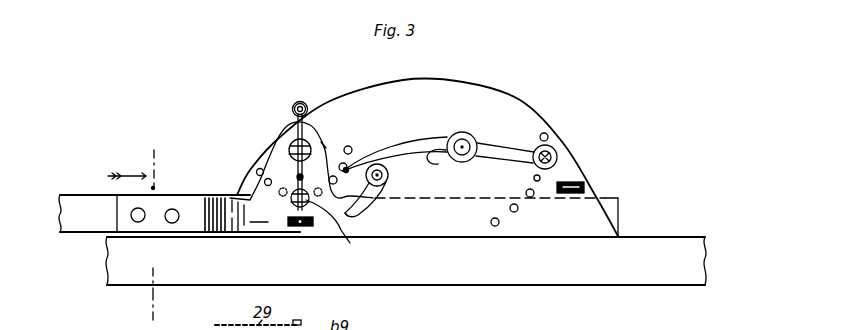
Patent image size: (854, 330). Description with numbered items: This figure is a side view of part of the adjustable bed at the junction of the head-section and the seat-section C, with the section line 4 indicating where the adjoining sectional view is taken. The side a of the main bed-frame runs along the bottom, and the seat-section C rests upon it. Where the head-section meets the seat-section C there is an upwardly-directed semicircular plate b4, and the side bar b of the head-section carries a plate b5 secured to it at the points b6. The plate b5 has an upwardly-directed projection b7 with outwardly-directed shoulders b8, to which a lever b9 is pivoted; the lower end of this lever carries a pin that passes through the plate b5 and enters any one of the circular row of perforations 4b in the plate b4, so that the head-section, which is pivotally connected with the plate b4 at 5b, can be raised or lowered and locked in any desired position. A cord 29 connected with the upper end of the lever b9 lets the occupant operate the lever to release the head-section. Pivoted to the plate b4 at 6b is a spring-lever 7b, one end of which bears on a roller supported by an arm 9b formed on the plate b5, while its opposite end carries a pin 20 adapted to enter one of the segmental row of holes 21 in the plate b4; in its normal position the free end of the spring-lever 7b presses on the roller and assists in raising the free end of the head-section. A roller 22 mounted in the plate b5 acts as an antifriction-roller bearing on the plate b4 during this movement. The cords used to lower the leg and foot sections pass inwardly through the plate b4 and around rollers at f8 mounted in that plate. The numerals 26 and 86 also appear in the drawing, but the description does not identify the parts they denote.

The side bar of the bed-frame a is at (406, 261).
The side bar of the head-section b is at (92, 226).
The section line 4 4 is at (135, 229).
The securing means of the plate b5 b6 is at (174, 208).
The semicircular plate b4 is at (448, 81).
The outwardly-directed shoulders or projections b8 is at (294, 150).
The pivotal connection of the head-section 5b is at (310, 142).
The cord 29 is at (300, 101).
The lever b9 is at (292, 108).
The upwardly-directed projection b7 is at (324, 143).
The roller 22 is at (303, 228).
The plate b5 is at (258, 222).
The spring 26 is at (338, 231).
The arm 9b is at (362, 200).
The lever arm 86 is at (382, 212).
The pivot of the lever 7b 6b is at (465, 140).
The circular or segmental row of perforations 4b is at (352, 152).
The spring-lever 7b is at (447, 151).
The pin 20 is at (556, 155).
The holes or perforations 21 is at (547, 134).
The rollers f8 is at (586, 182).
The seat-section C is at (614, 203).